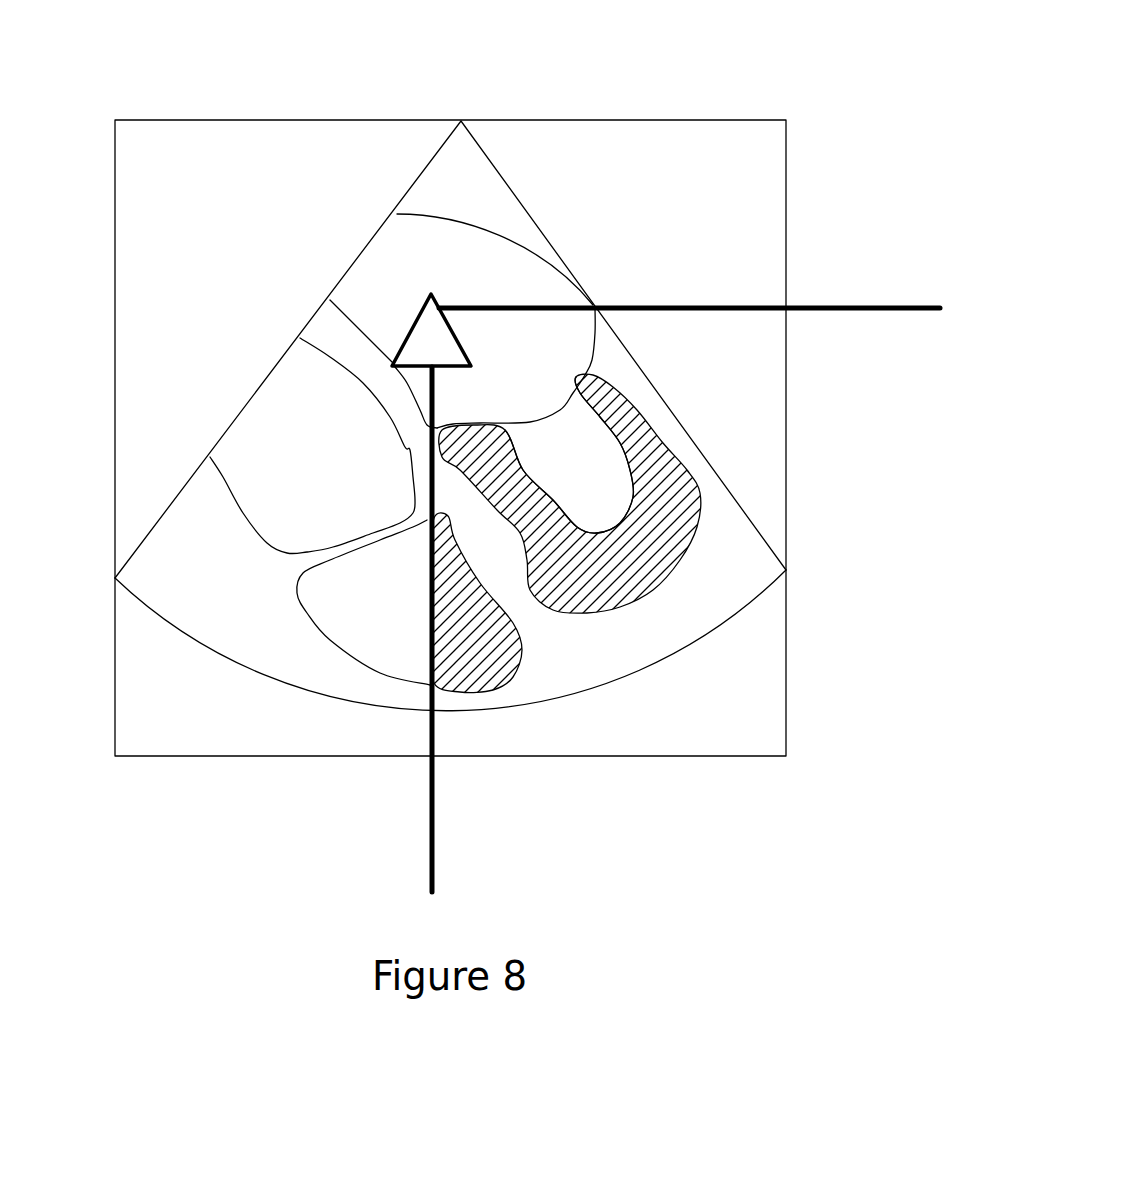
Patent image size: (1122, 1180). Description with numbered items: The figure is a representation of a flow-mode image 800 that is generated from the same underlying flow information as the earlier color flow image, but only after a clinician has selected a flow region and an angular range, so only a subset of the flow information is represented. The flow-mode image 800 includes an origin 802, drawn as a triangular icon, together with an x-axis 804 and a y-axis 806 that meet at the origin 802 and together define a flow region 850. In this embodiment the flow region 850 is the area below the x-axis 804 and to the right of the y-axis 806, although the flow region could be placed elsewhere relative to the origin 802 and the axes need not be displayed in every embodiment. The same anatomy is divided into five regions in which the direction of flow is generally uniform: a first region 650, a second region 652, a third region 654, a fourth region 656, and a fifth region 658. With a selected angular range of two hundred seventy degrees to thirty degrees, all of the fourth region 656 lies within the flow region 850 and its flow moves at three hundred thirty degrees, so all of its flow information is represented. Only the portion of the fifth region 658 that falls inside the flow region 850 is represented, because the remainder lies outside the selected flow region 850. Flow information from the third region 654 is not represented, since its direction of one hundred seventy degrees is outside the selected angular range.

The flow-mode image 800 is at (781, 61).
The origin 802 is at (427, 343).
The x-axis 804 is at (856, 303).
The y-axis 806 is at (428, 813).
The flow region 850 is at (707, 613).
The first region 650 is at (339, 462).
The second region 652 is at (503, 274).
The third region 654 is at (596, 474).
The fourth region 656 is at (634, 587).
The fifth region 658 is at (418, 642).